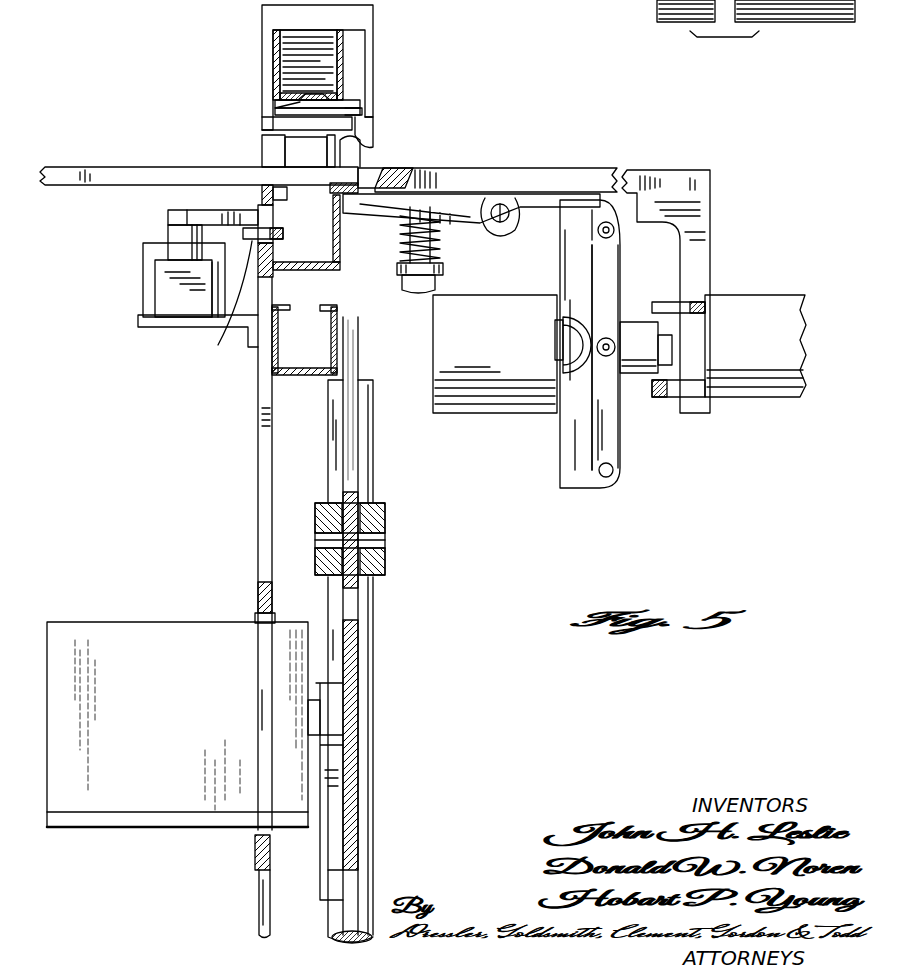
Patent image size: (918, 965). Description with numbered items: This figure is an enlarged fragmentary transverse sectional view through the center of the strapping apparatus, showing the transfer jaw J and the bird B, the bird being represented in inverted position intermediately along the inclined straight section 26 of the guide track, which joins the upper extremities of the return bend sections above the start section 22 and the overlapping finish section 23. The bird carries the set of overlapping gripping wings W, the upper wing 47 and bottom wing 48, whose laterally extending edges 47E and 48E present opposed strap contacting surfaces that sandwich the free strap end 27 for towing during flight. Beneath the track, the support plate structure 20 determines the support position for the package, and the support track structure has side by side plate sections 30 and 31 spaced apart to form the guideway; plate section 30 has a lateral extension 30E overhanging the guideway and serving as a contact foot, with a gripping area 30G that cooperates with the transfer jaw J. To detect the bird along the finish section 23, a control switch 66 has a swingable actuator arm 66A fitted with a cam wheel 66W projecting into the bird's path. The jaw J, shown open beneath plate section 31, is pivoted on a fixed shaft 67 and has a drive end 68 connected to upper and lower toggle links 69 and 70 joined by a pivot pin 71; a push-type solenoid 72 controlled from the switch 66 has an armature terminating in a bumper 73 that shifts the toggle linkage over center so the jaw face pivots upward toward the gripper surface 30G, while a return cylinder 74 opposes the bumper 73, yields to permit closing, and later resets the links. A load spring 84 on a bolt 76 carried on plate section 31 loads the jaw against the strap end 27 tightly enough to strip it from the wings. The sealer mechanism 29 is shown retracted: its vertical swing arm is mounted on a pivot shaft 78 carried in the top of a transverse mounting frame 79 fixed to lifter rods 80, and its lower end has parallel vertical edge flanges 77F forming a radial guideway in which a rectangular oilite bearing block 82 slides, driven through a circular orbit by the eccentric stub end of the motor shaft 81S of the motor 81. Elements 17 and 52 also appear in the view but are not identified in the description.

The rod 17 is at (356, 455).
The support plate structure 20 is at (620, 166).
The start section 22 is at (283, 378).
The finish section 23 is at (340, 256).
The inclined straight section 26 is at (340, 56).
The free strap end 27 is at (372, 140).
The sealer mechanism 29 is at (378, 628).
The plate section 30 is at (113, 170).
The lateral extension 30E is at (345, 182).
The gripping area 30G is at (333, 202).
The plate section 31 is at (590, 175).
The upper gripping wing 47 is at (305, 105).
The laterally extending edge 47E is at (362, 117).
The bottom gripping wing 48 is at (286, 100).
The laterally extending edge 48E is at (352, 107).
The member 52 is at (139, 5).
The control switch 66 is at (170, 296).
The swingable actuator arm 66A is at (186, 218).
The cam wheel 66W is at (229, 302).
The fixed shaft 67 is at (508, 200).
The drive end 68 is at (570, 203).
The upper toggle link 69 is at (609, 255).
The lower toggle link 70 is at (618, 420).
The pivot pin 71 is at (613, 340).
The push-type solenoid 72 is at (470, 341).
The bumper 73 is at (570, 346).
The return cylinder 74 is at (748, 312).
The bolt 76 is at (436, 278).
The vertical edge flanges 77F is at (335, 816).
The pivot shaft 78 is at (385, 543).
The transverse mounting frame 79 is at (388, 530).
The lifter rods 80 is at (350, 900).
The motor 81 is at (137, 675).
The motor shaft eccentric stub end 81S is at (312, 708).
The rectangular oilite bearing block 82 is at (353, 737).
The load spring 84 is at (430, 217).
The bird B is at (230, 48).
The gripping wings W is at (312, 87).
The transfer jaw J is at (367, 216).